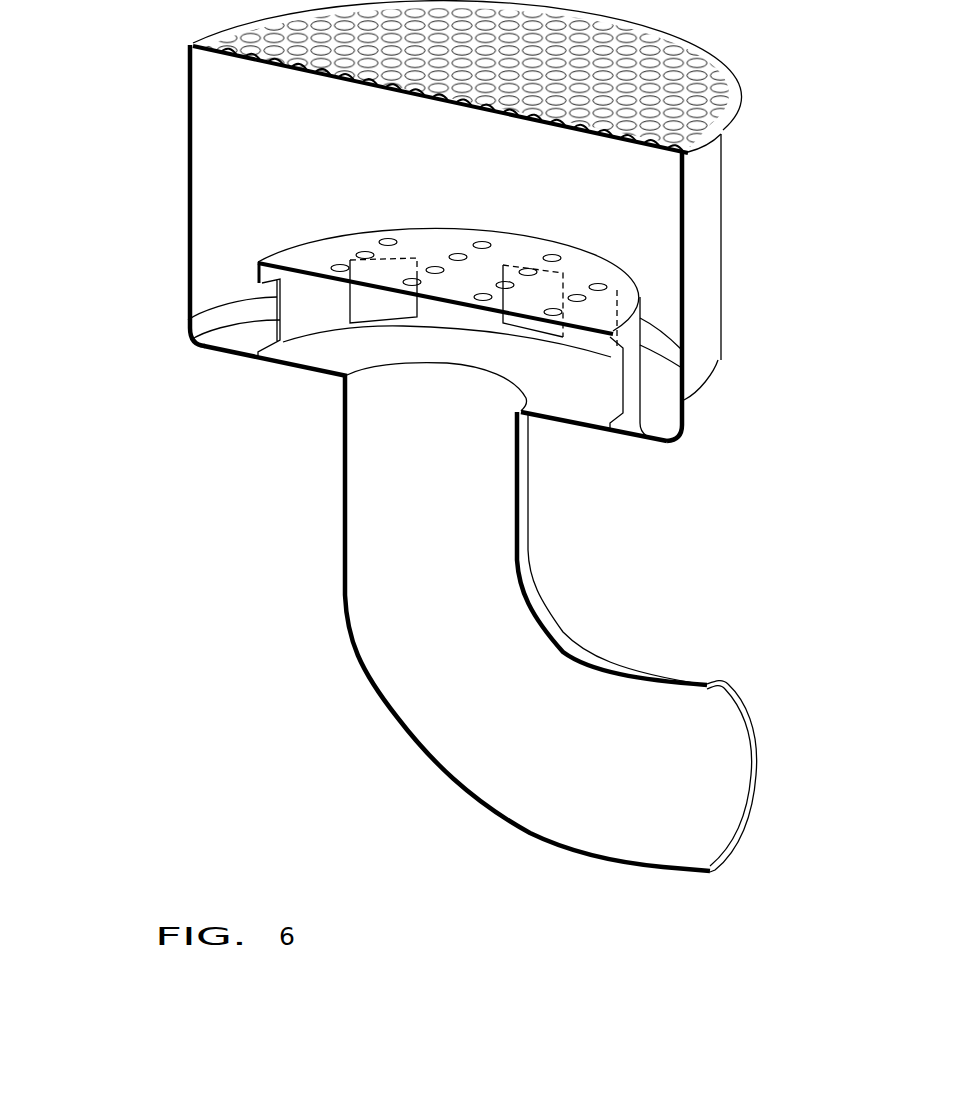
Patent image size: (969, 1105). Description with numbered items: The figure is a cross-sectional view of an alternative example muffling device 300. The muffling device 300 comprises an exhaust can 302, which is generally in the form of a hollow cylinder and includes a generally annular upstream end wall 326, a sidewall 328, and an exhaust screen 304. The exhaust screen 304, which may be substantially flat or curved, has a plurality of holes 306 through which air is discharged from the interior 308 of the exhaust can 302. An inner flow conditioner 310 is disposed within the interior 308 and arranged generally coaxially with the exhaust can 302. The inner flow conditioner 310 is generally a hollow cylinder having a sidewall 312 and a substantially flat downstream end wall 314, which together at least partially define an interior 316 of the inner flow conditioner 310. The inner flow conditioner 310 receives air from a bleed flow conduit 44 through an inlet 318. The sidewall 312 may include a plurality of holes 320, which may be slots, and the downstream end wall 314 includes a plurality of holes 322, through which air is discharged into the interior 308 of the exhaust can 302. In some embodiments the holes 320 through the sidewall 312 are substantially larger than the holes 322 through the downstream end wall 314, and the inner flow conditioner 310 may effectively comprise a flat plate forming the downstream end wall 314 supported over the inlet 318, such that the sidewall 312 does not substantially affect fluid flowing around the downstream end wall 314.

The muffling device 300 is at (124, 159).
The exhaust can 302 is at (745, 346).
The exhaust screen 304 is at (624, 40).
The holes 306 is at (710, 103).
The interior of exhaust can 308 is at (665, 307).
The inner flow conditioner 310 is at (664, 400).
The sidewall of inner flow conditioner 312 is at (295, 313).
The downstream end wall 314 is at (325, 252).
The interior of inner flow conditioner 316 is at (552, 403).
The inlet 318 is at (383, 426).
The holes 320 is at (608, 300).
The holes 322 is at (393, 242).
The upstream end wall 326 is at (652, 433).
The sidewall 328 is at (713, 318).
The bleed flow conduit 44 is at (647, 668).